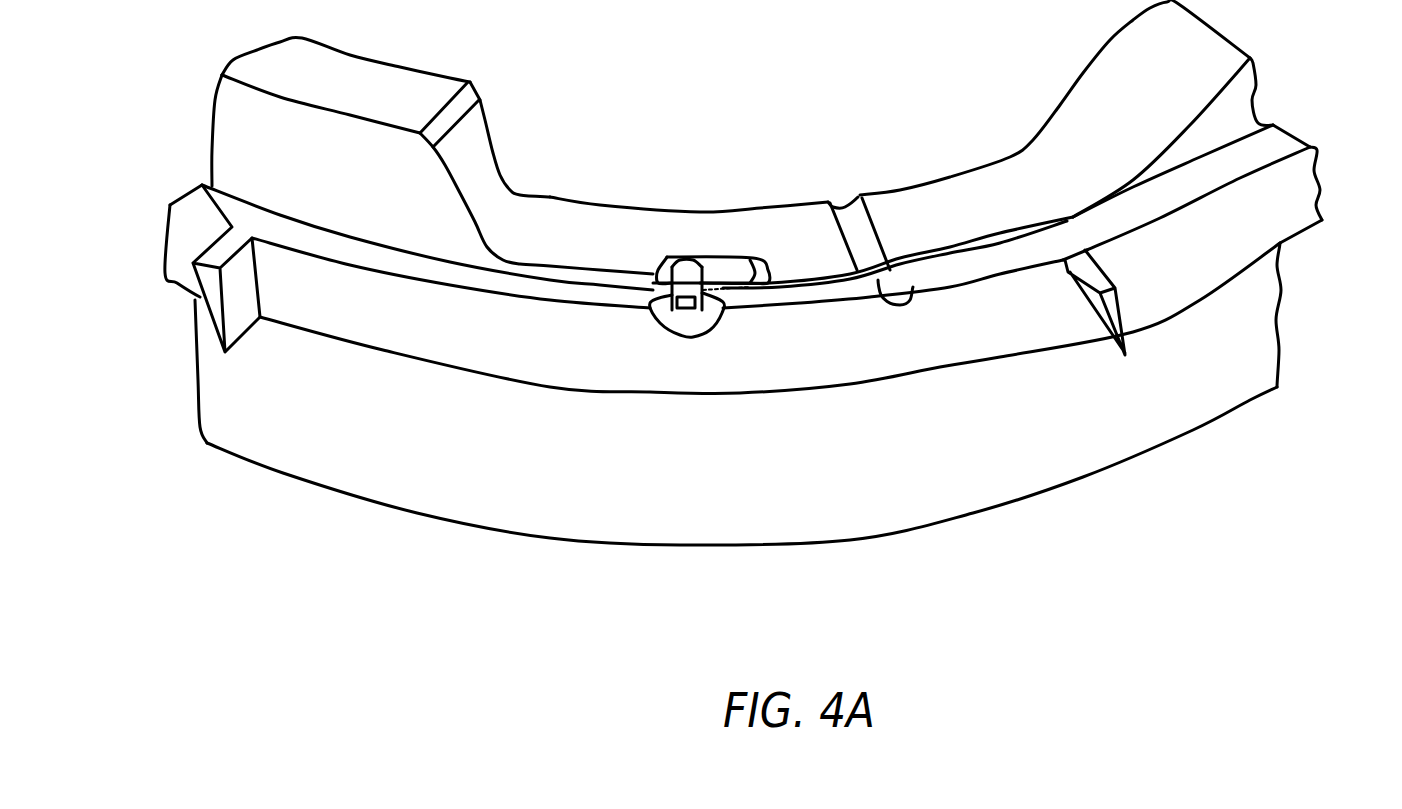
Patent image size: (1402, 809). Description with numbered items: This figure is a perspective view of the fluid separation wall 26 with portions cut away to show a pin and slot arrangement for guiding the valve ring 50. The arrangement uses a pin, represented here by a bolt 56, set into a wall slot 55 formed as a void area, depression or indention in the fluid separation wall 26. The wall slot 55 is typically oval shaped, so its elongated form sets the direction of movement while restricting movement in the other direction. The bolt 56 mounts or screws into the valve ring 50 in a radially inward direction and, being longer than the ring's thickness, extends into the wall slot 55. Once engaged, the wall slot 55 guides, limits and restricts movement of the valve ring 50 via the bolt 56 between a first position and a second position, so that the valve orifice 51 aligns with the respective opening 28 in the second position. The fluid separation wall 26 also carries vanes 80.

The fluid separation wall 26 is at (257, 163).
The opening 28 is at (853, 230).
The valve ring 50 is at (539, 357).
The valve orifice 51 is at (908, 288).
The wall slot 55 is at (723, 267).
The bolt 56 is at (690, 322).
The vane 80 is at (238, 303).